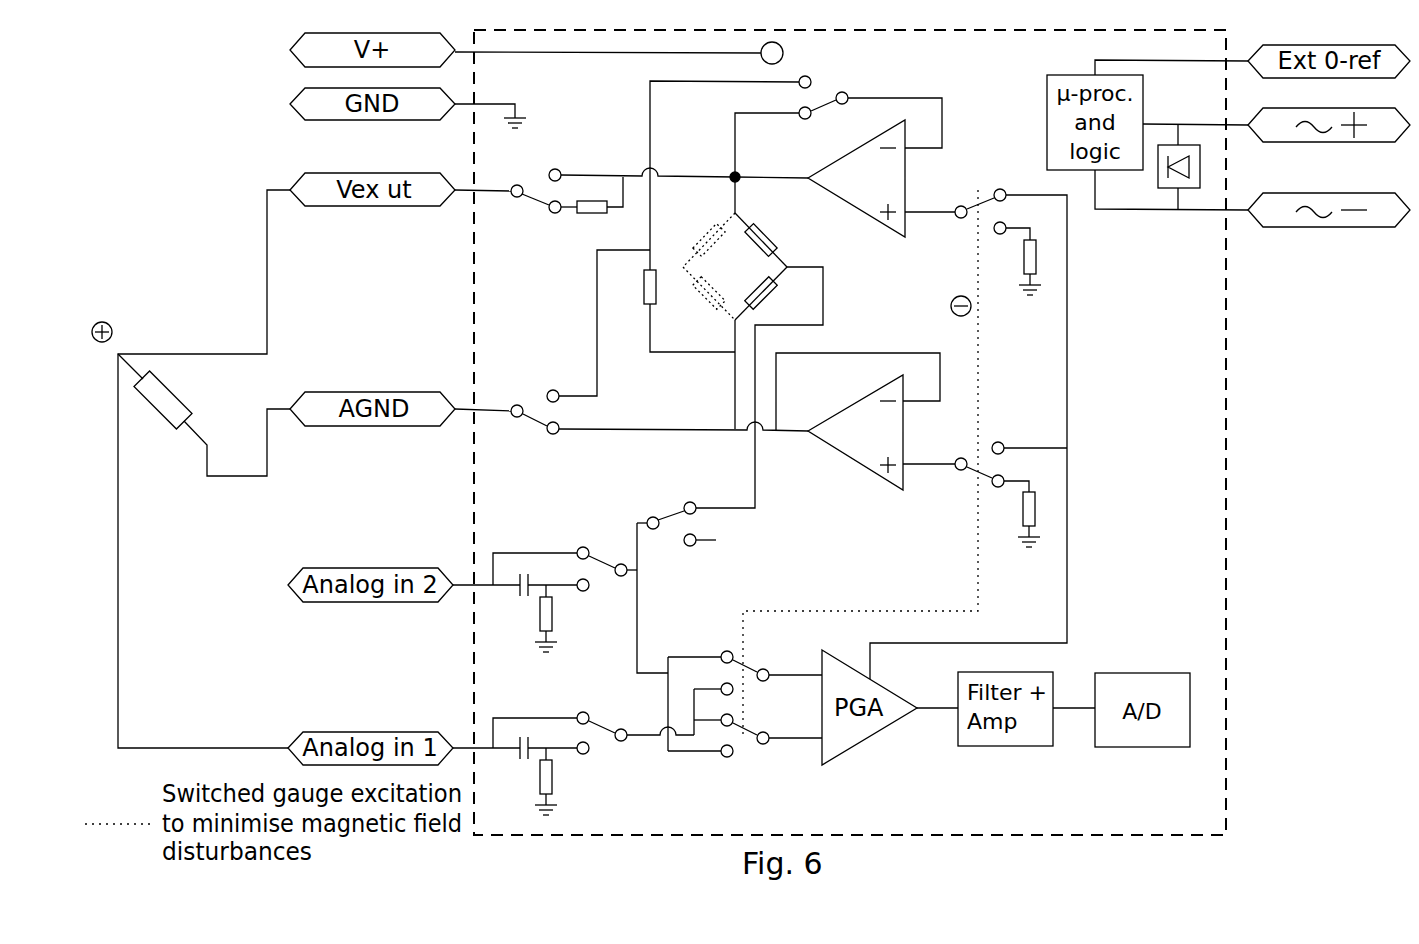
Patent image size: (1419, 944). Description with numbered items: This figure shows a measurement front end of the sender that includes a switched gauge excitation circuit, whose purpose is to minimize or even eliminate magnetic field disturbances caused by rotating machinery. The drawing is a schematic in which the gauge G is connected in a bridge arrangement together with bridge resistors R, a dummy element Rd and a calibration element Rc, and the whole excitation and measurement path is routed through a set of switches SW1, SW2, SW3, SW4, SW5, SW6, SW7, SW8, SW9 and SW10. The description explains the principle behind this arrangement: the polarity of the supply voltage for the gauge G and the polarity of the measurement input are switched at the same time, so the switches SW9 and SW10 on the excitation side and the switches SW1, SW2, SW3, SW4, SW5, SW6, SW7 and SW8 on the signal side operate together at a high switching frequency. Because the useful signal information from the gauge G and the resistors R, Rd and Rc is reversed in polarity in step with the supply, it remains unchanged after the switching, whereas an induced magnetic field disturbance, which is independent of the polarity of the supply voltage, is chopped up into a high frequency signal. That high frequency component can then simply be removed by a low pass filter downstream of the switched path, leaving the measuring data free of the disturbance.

The switch SW1 is at (968, 434).
The switch SW2 is at (985, 494).
The switch SW3 is at (745, 701).
The switch SW4 is at (777, 727).
The switch SW5 is at (545, 588).
The switch SW6 is at (573, 756).
The switch SW7 is at (507, 407).
The switch SW8 is at (675, 511).
The switch SW9 is at (508, 199).
The switch SW10 is at (838, 120).
The dummy resistor Rd is at (592, 209).
The calibration resistor Rc is at (679, 238).
The bridge resistor R is at (761, 268).
The strain gauge G is at (703, 268).